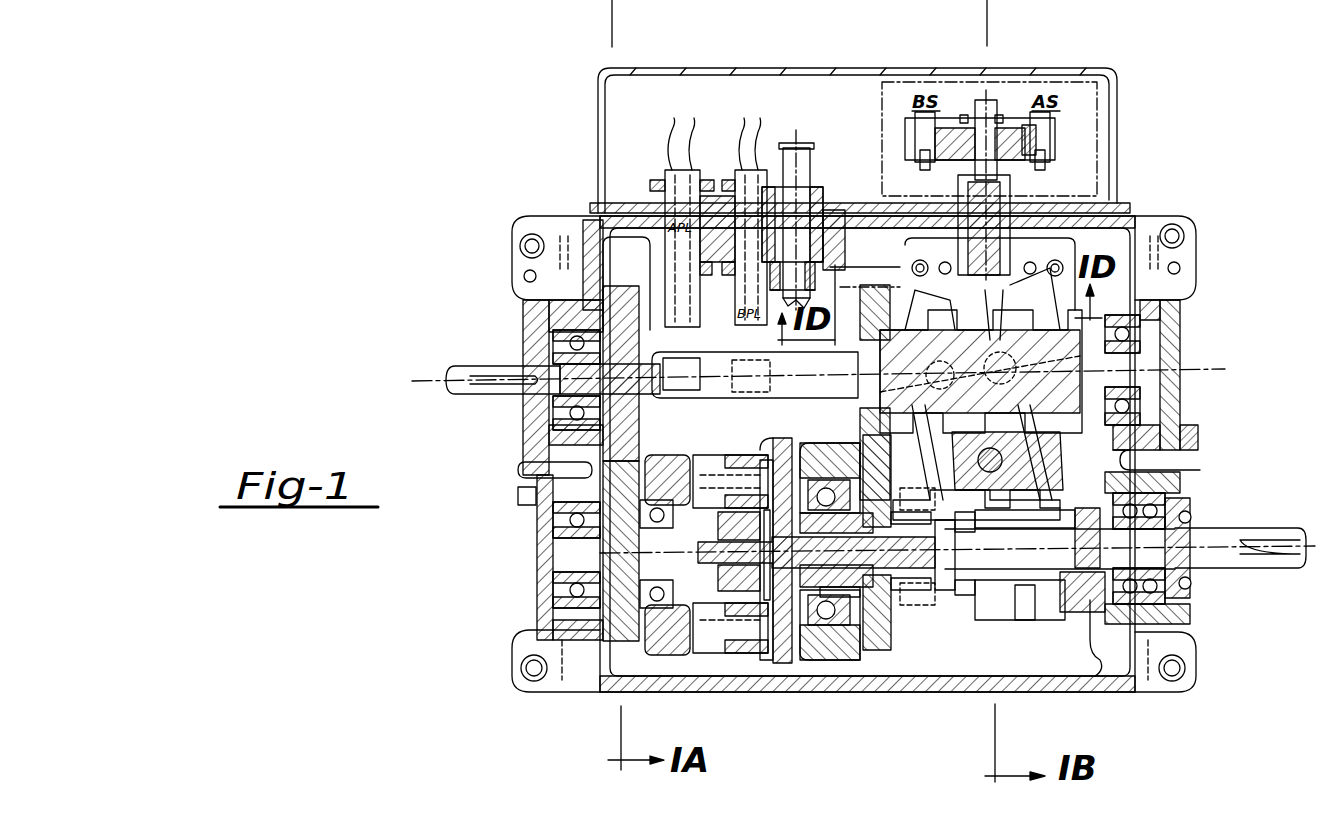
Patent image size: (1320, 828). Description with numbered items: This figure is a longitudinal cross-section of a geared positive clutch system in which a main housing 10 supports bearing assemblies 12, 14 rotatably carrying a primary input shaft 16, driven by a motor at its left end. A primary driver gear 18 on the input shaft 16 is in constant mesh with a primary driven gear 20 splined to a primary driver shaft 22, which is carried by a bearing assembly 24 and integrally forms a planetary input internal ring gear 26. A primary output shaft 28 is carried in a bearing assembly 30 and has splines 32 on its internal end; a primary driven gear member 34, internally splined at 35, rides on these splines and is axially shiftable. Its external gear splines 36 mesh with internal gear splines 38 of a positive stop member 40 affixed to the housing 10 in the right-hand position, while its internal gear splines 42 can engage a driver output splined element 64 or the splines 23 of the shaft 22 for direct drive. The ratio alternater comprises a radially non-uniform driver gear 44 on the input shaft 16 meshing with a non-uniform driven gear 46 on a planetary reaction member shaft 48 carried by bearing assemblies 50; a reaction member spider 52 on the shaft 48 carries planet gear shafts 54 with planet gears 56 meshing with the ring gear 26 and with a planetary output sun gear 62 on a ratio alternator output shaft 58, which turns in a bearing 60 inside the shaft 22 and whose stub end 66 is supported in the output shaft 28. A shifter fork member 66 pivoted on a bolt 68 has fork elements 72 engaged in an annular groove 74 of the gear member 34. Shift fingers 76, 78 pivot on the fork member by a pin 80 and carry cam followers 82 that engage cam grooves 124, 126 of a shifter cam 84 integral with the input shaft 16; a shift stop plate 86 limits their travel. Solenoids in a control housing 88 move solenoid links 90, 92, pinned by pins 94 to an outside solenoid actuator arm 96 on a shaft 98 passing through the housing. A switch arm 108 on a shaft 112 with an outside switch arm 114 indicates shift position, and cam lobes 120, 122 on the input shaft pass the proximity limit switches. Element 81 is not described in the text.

The main housing 10 is at (520, 660).
The bearing assembly 12 is at (535, 336).
The bearing assembly 14 is at (1150, 330).
The primary input shaft 16 is at (470, 368).
The primary driver gear 18 is at (860, 428).
The primary driven gear 20 is at (892, 640).
The primary driver shaft 22 is at (885, 628).
The splines of the shaft 23 is at (912, 490).
The bearing assembly 24 is at (835, 640).
The planetary input internal ring gear 26 is at (752, 625).
The primary output shaft 28 is at (1258, 532).
The bearing assembly 30 is at (1170, 632).
The splines 32 is at (1060, 600).
The primary driven gear member 34 is at (985, 620).
The internal splines 35 is at (1070, 580).
The external gear splines 36 is at (1085, 610).
The internal gear splines 38 is at (1095, 580).
The positive stop member 40 is at (1095, 678).
The internal gear splines 42 is at (965, 600).
The radially non-uniform driver gear 44 is at (620, 292).
The radially non-uniform driven gear 46 is at (560, 472).
The planetary reaction member shaft 48 is at (565, 560).
The bearing assemblies 50 is at (585, 598).
The reaction member spider 52 is at (712, 470).
The planet gear shafts 54 is at (740, 455).
The planet gears 56 is at (765, 445).
The ratio alternator output shaft 58 is at (800, 635).
The bearing 60 is at (820, 640).
The planetary output sun gear 62 is at (770, 640).
The ratio alternator driver output splined element 64 is at (948, 595).
The shifter fork member 66 is at (1058, 462).
The bolt 68 is at (1040, 440).
The shifter fork elements 72 is at (1030, 530).
The annular groove 74 is at (1020, 605).
The shift finger 76 is at (1012, 312).
The shift finger 78 is at (922, 312).
The pin 80 is at (1045, 500).
The pivot pin 81 is at (998, 300).
The cam followers 82 is at (1022, 364).
The shifter cam 84 is at (1106, 335).
The shift stop plate 86 is at (1020, 260).
The control housing 88 is at (1118, 100).
The solenoid link 90 is at (916, 146).
The solenoid link 92 is at (1050, 136).
The pins 94 is at (918, 126).
The outside solenoid actuator arm 96 is at (1022, 120).
The shaft 98 is at (978, 120).
The shift position indicator inside switch arm 108 is at (822, 280).
The shaft 112 is at (798, 150).
The outside position indicator switch arm 114 is at (812, 180).
The cam lobe 120 is at (686, 344).
The cam lobe 122 is at (720, 396).
The cam groove 124 is at (855, 366).
The cam groove 126 is at (1002, 274).